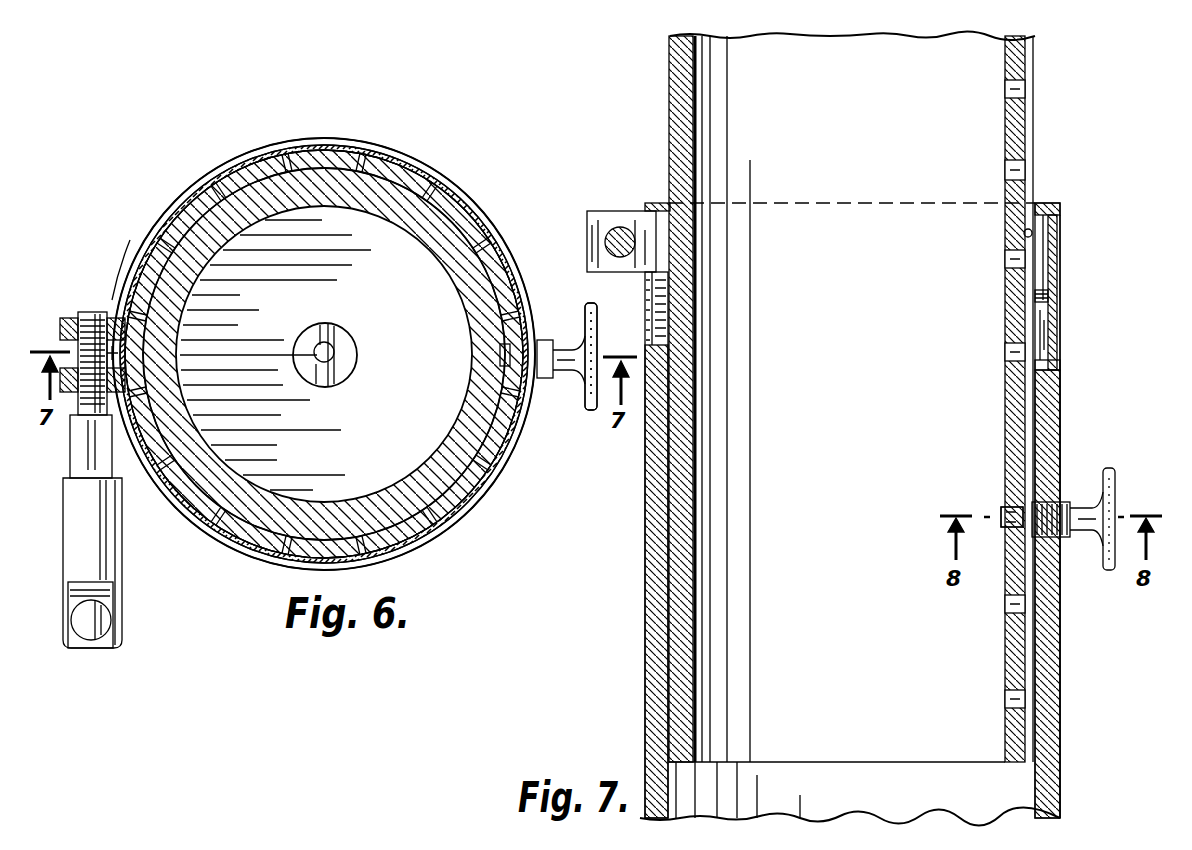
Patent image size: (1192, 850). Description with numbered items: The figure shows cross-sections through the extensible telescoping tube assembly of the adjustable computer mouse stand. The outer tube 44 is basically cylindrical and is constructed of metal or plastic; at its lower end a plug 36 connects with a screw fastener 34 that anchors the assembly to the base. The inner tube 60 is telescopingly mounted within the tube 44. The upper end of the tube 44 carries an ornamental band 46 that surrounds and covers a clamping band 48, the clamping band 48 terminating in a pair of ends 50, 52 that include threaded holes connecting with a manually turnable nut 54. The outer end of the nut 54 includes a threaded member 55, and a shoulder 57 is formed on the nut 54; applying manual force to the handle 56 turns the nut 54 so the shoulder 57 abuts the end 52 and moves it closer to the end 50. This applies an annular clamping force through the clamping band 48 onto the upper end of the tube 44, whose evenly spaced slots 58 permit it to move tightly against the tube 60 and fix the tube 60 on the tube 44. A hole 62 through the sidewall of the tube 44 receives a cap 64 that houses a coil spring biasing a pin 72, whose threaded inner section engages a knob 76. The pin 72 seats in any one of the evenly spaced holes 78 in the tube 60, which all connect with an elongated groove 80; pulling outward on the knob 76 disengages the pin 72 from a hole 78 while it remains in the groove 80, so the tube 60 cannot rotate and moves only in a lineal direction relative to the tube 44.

In FIG. 6, the screw fastener 34 is at (320, 365).
In FIG. 6, the plug 36 is at (357, 350).
In FIG. 6, the tube 44 is at (466, 172).
In FIG. 7, the tube 44 is at (645, 706).
In FIG. 6, the ornamental band 46 is at (496, 488).
In FIG. 7, the ornamental band 46 is at (1060, 325).
In FIG. 6, the clamping band 48 is at (452, 530).
In FIG. 7, the clamping band 48 is at (1060, 240).
In FIG. 6, the end 50 is at (118, 305).
In FIG. 7, the end 50 is at (600, 211).
In FIG. 6, the end 52 is at (126, 430).
In FIG. 6, the manually turnable nut 54 is at (122, 555).
In FIG. 6, the threaded member 55 is at (85, 313).
In FIG. 7, the threaded member 55 is at (622, 227).
In FIG. 6, the handle 56 is at (290, 148).
In FIG. 7, the handle 56 is at (1060, 280).
In FIG. 6, the shoulder 57 is at (70, 420).
In FIG. 7, the slots 58 is at (1060, 348).
In FIG. 6, the tube 60 is at (505, 440).
In FIG. 7, the tube 60 is at (672, 108).
In FIG. 7, the hole 62 is at (1058, 502).
In FIG. 6, the cap 64 is at (545, 380).
In FIG. 7, the cap 64 is at (1068, 536).
In FIG. 7, the pin 72 is at (1004, 515).
In FIG. 6, the knob 76 is at (585, 300).
In FIG. 7, the knob 76 is at (1112, 468).
In FIG. 7, the holes 78 is at (1020, 180).
In FIG. 6, the elongated groove 80 is at (500, 358).
In FIG. 7, the elongated groove 80 is at (1024, 233).